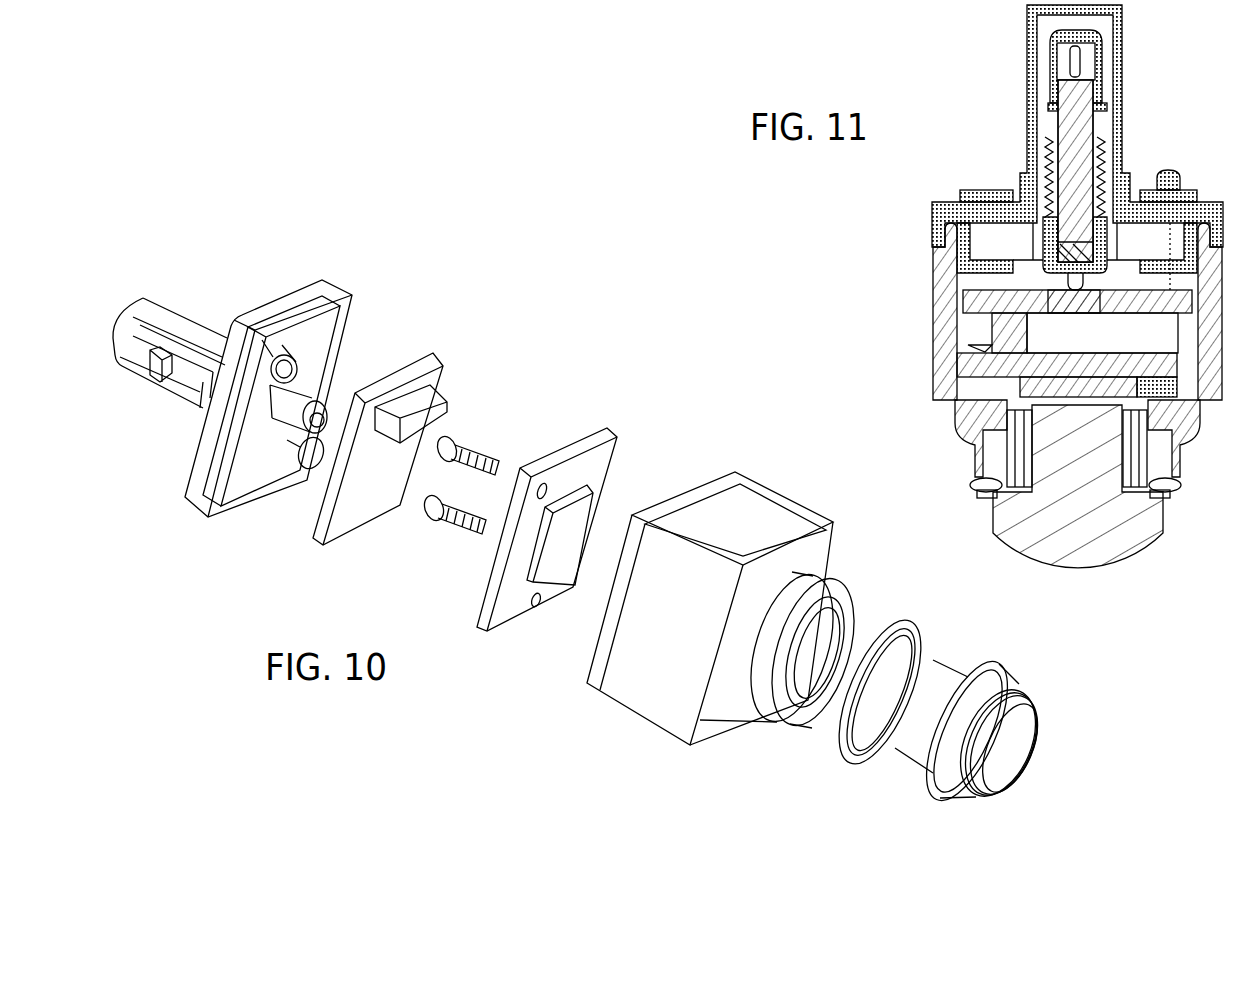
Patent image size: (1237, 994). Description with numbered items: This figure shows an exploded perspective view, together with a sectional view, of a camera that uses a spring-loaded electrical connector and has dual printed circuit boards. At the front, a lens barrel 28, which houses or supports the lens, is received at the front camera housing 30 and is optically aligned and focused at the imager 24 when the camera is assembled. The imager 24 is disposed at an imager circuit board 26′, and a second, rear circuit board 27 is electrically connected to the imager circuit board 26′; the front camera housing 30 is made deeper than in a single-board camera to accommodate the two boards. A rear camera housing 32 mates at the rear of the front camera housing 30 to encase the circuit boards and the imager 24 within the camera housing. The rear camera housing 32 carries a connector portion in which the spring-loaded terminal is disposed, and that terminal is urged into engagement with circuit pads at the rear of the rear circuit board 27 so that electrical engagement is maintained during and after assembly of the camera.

The imager 24 is at (552, 553).
The imager circuit board 26′ is at (547, 503).
The rear circuit board 27 is at (392, 483).
The lens barrel 28 is at (918, 752).
The front camera housing 30 is at (662, 703).
The rear camera housing 32 is at (197, 493).